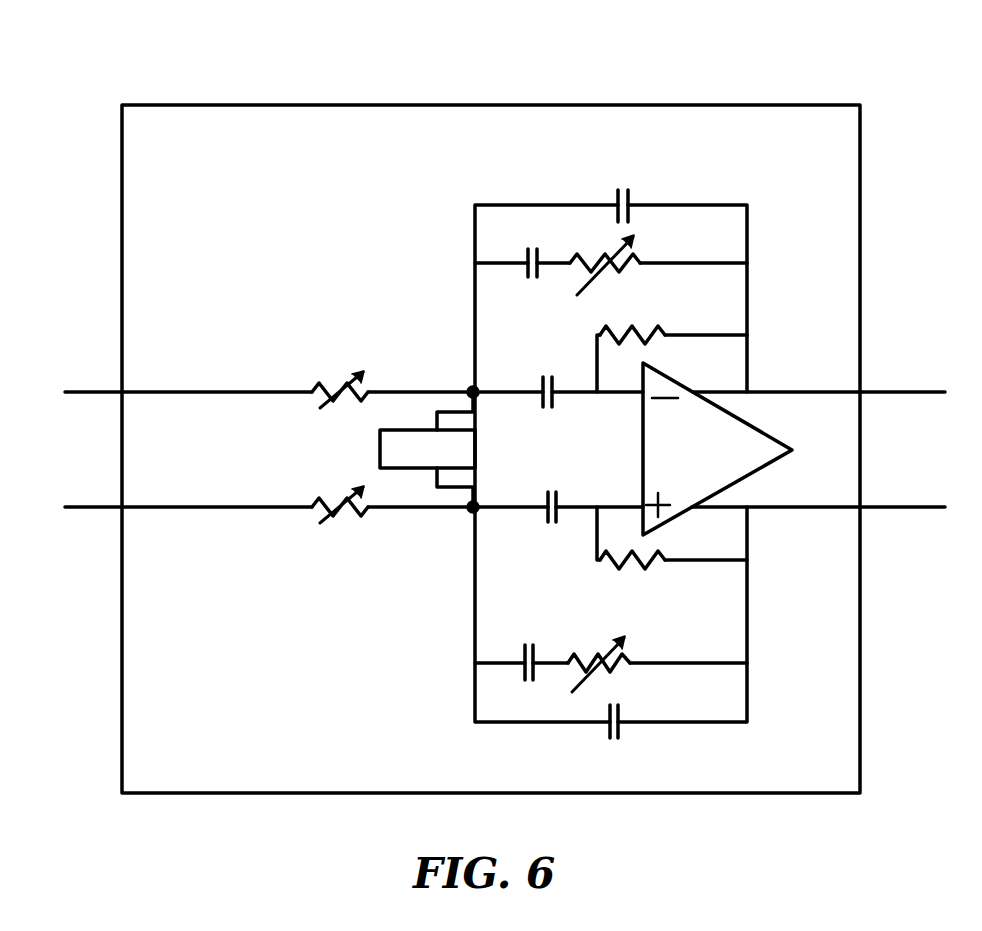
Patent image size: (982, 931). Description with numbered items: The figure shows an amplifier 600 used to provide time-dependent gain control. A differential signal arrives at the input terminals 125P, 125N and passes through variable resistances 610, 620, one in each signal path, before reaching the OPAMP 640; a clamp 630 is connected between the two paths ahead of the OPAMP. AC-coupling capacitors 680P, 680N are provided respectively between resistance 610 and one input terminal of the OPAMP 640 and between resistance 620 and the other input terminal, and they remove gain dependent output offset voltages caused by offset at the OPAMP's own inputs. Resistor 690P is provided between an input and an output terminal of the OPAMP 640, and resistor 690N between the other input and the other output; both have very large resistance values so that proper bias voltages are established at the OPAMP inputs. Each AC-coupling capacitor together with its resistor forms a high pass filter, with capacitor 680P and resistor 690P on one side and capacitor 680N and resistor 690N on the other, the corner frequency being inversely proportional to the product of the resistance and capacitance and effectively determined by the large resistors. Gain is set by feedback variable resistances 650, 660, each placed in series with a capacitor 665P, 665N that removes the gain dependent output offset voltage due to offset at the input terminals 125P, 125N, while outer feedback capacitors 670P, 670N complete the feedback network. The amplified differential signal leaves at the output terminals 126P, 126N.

The amplifier 600 is at (408, 100).
The input terminal 125P is at (70, 390).
The input terminal 125N is at (76, 505).
The positive output 126P is at (930, 392).
The negative output 126N is at (932, 507).
The variable resistance 610 is at (320, 404).
The variable resistance 620 is at (326, 518).
The clamp 630 is at (380, 444).
The OPAMP 640 is at (710, 462).
The variable resistance 650 is at (642, 256).
The variable resistance 660 is at (616, 656).
The capacitor 665P is at (535, 278).
The capacitor 665N is at (520, 648).
The capacitor 670P is at (668, 178).
The capacitor 670N is at (618, 740).
The AC-coupling capacitor 680P is at (548, 408).
The AC-coupling capacitor 680N is at (552, 524).
The resistor 690P is at (660, 334).
The resistor 690N is at (660, 560).